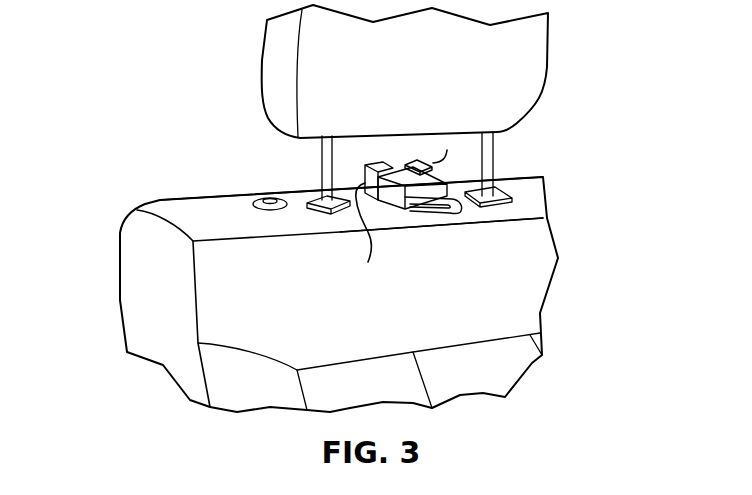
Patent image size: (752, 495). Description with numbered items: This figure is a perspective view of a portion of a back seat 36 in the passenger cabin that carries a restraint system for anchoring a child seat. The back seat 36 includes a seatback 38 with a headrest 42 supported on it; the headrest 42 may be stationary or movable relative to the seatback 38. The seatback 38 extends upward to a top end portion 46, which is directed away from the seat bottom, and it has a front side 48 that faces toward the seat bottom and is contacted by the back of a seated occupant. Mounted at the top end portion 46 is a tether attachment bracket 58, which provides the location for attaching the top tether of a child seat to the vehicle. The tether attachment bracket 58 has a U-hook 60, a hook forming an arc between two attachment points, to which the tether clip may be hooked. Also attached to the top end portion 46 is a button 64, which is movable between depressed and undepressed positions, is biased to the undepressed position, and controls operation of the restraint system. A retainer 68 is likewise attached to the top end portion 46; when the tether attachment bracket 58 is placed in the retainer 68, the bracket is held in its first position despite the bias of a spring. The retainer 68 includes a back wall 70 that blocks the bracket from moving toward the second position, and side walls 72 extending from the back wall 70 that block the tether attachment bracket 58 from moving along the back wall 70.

The back seat 36 is at (157, 123).
The seatback 38 is at (118, 297).
The headrest 42 is at (545, 68).
The top end portion 46 is at (220, 196).
The front side 48 is at (438, 329).
The tether attachment bracket 58 is at (464, 190).
The U-hook 60 is at (440, 217).
The button 64 is at (267, 213).
The retainer 68 is at (375, 164).
The back wall 70 is at (420, 161).
The side walls 72 is at (436, 158).